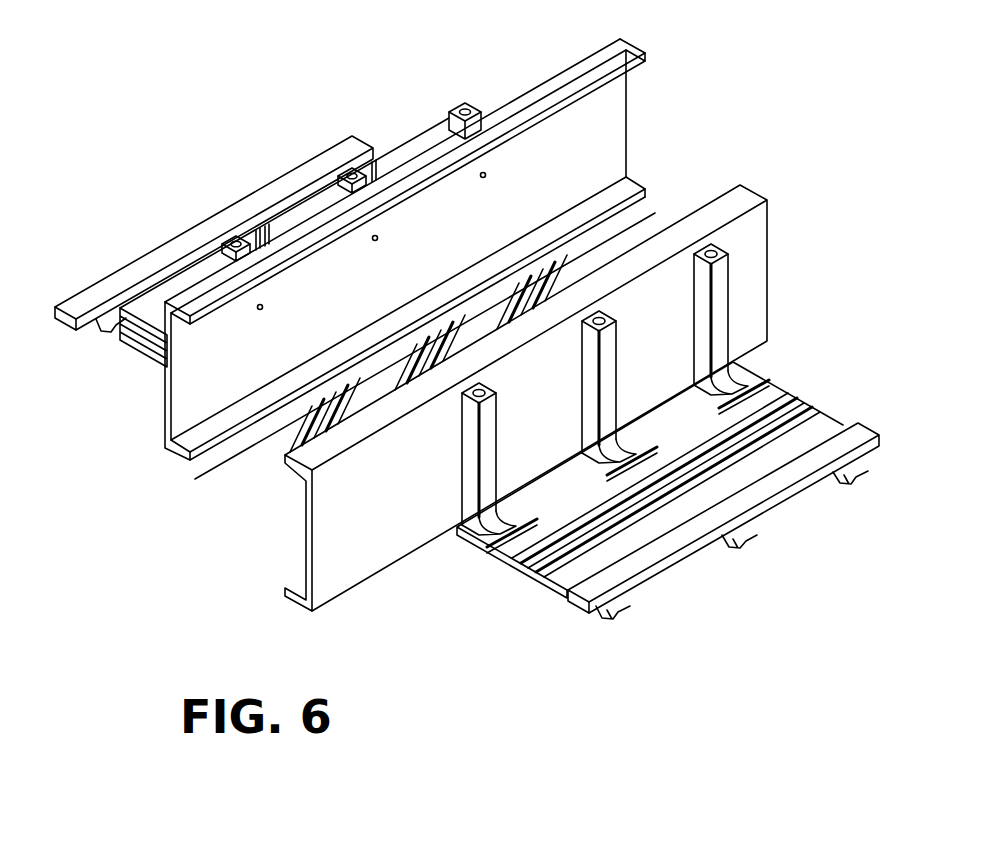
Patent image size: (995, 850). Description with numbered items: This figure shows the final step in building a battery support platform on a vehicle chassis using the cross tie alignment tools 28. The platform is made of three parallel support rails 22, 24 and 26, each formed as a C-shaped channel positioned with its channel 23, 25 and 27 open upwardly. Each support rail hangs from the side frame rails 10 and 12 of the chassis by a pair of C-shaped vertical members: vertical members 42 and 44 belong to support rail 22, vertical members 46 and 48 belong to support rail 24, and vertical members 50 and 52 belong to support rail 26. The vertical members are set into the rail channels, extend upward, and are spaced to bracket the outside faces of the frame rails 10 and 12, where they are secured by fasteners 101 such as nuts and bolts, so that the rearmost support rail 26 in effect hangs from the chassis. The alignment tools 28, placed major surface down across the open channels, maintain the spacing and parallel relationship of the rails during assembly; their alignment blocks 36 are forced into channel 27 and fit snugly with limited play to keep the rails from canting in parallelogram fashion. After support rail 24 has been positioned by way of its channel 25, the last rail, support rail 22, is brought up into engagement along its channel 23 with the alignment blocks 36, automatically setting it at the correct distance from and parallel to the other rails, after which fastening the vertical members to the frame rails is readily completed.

The frame rail 10 is at (753, 292).
The frame rail 12 is at (605, 128).
The support rail 22 is at (332, 412).
The channel 23 is at (562, 547).
The support rail 24 is at (452, 340).
The channel 25 is at (686, 477).
The support rail 26 is at (576, 272).
The channel 27 is at (802, 418).
The cross tie alignment tool 28 is at (112, 283).
The alignment block 36 is at (105, 317).
The vertical member 42 is at (213, 250).
The vertical member 44 is at (470, 434).
The vertical member 46 is at (340, 168).
The vertical member 48 is at (590, 383).
The vertical member 50 is at (457, 104).
The vertical member 52 is at (703, 303).
The fastener 101 is at (484, 176).